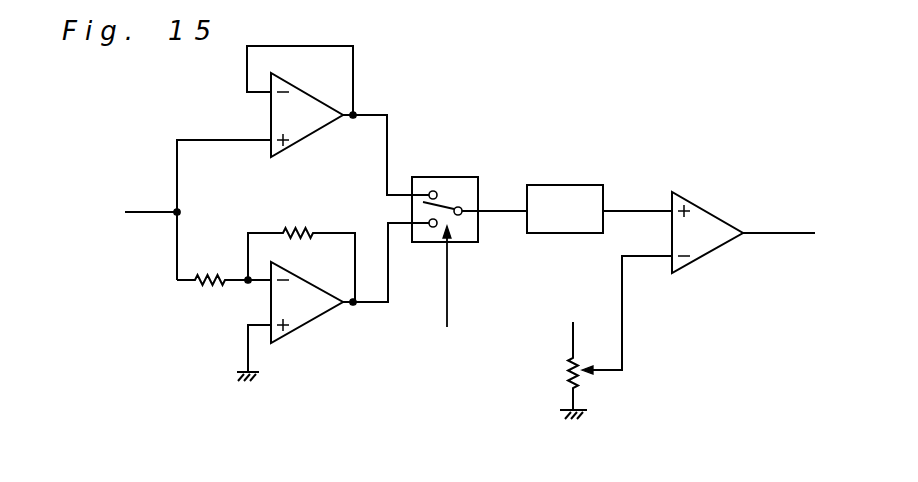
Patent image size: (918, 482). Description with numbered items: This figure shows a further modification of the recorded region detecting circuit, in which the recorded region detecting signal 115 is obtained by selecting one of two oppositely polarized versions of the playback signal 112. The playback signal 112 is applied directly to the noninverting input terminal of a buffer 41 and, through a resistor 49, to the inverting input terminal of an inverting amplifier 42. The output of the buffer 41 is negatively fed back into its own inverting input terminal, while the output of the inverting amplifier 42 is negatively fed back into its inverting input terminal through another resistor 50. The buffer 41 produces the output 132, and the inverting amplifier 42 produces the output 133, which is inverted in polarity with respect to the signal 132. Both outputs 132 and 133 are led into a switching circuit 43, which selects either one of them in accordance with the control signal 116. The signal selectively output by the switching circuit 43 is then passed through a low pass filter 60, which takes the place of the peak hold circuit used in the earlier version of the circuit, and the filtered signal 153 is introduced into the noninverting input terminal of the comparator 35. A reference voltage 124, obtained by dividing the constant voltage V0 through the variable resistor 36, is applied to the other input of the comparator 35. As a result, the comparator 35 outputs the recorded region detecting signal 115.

The playback signal 112 is at (138, 213).
The resistor 49 is at (205, 283).
The resistor 50 is at (300, 230).
The buffer 41 is at (313, 133).
The inverting amplifier 42 is at (305, 323).
The output signal of the buffer 132 is at (367, 112).
The output signal of the inverting amplifier 133 is at (370, 305).
The switching circuit 43 is at (433, 178).
The control signal 116 is at (448, 297).
The low pass filter 60 is at (560, 183).
The filtered signal 153 is at (633, 209).
The comparator 35 is at (705, 210).
The recorded region detecting signal 115 is at (782, 236).
The variable resistor 36 is at (566, 376).
The reference voltage line 124 is at (622, 328).